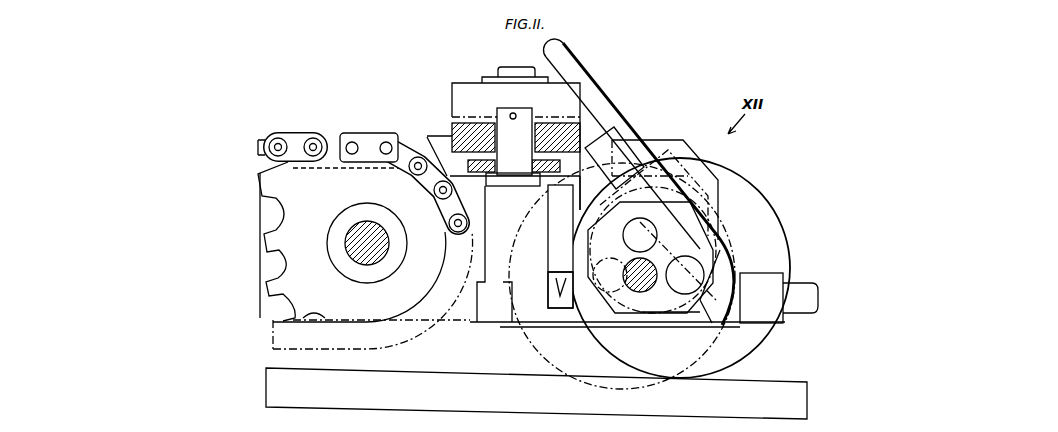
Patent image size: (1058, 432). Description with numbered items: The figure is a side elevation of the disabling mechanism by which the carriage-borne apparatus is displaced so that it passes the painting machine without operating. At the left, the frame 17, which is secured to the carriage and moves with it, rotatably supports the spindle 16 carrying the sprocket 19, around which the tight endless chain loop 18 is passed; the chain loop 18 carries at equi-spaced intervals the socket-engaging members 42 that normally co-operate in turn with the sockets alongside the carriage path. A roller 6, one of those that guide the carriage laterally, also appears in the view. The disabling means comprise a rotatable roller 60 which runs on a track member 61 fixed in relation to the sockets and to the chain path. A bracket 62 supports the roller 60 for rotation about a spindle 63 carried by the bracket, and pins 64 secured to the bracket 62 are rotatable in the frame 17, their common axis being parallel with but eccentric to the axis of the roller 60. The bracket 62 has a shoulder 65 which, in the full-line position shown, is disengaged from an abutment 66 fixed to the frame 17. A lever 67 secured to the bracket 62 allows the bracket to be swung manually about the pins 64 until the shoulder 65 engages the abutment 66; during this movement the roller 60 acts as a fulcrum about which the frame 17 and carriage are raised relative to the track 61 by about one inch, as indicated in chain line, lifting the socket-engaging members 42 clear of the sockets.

The roller 6 is at (463, 93).
The spindle 16 is at (370, 250).
The frame 17 is at (463, 318).
The endless chain loop 18 is at (296, 143).
The sprocket 19 is at (283, 236).
The socket-engaging member 42 is at (373, 140).
The roller 60 is at (753, 332).
The track member 61 is at (747, 397).
The bracket 62 is at (653, 170).
The spindle 63 is at (617, 267).
The pin 64 is at (640, 230).
The shoulder 65 is at (568, 268).
The abutment 66 is at (547, 190).
The lever 67 is at (593, 102).